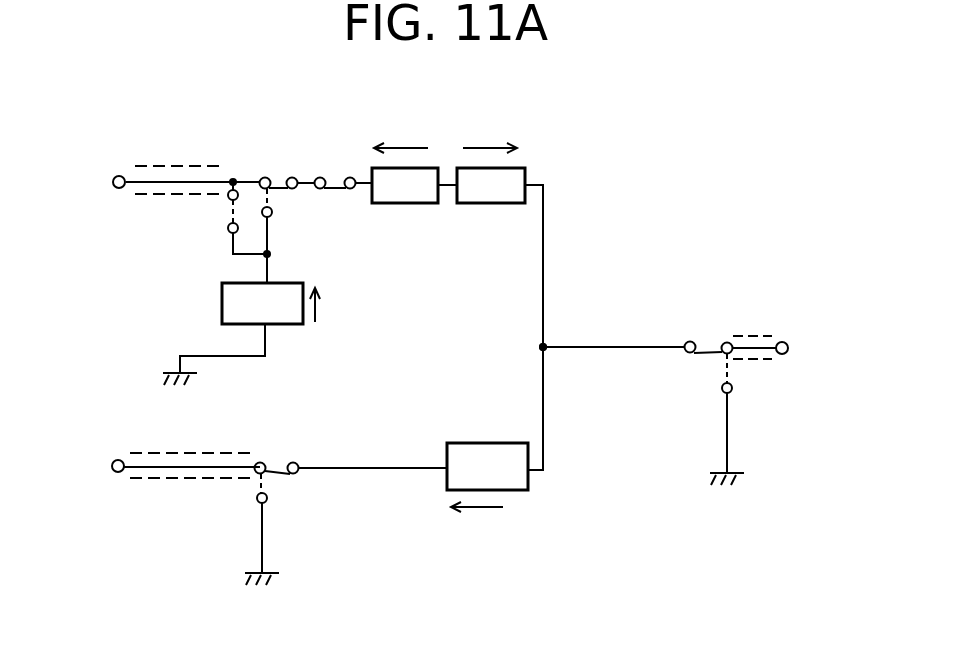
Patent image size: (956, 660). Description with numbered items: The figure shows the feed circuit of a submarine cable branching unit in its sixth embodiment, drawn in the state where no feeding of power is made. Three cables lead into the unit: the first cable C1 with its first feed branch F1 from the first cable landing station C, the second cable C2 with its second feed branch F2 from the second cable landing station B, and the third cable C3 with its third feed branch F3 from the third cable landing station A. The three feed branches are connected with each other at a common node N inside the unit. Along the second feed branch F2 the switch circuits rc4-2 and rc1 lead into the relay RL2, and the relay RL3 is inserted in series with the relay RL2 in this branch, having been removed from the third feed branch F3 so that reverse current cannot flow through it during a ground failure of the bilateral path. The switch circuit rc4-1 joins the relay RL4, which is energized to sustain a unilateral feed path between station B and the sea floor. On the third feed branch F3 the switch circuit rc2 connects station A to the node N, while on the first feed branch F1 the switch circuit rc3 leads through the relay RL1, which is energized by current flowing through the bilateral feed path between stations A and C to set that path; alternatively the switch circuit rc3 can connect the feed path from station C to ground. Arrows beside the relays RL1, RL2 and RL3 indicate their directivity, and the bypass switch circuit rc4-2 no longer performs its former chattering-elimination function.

The second cable landing station B is at (104, 183).
The first cable landing station C is at (104, 466).
The third cable landing station A is at (793, 350).
The common node N is at (541, 347).
The first cable C1 is at (184, 450).
The second cable C2 is at (151, 162).
The third cable C3 is at (761, 327).
The first feed branch F1 is at (150, 471).
The second feed branch F2 is at (205, 181).
The third feed branch F3 is at (757, 358).
The switch circuit rc1 is at (287, 236).
The switch circuit rc2 is at (731, 397).
The switch circuit rc3 is at (281, 524).
The switch circuit rc4-1 is at (229, 199).
The bypass switch circuit rc4-2 is at (302, 167).
The relay RL1 is at (487, 477).
The relay RL2 is at (414, 173).
The relay RL3 is at (491, 173).
The relay RL4 is at (241, 334).